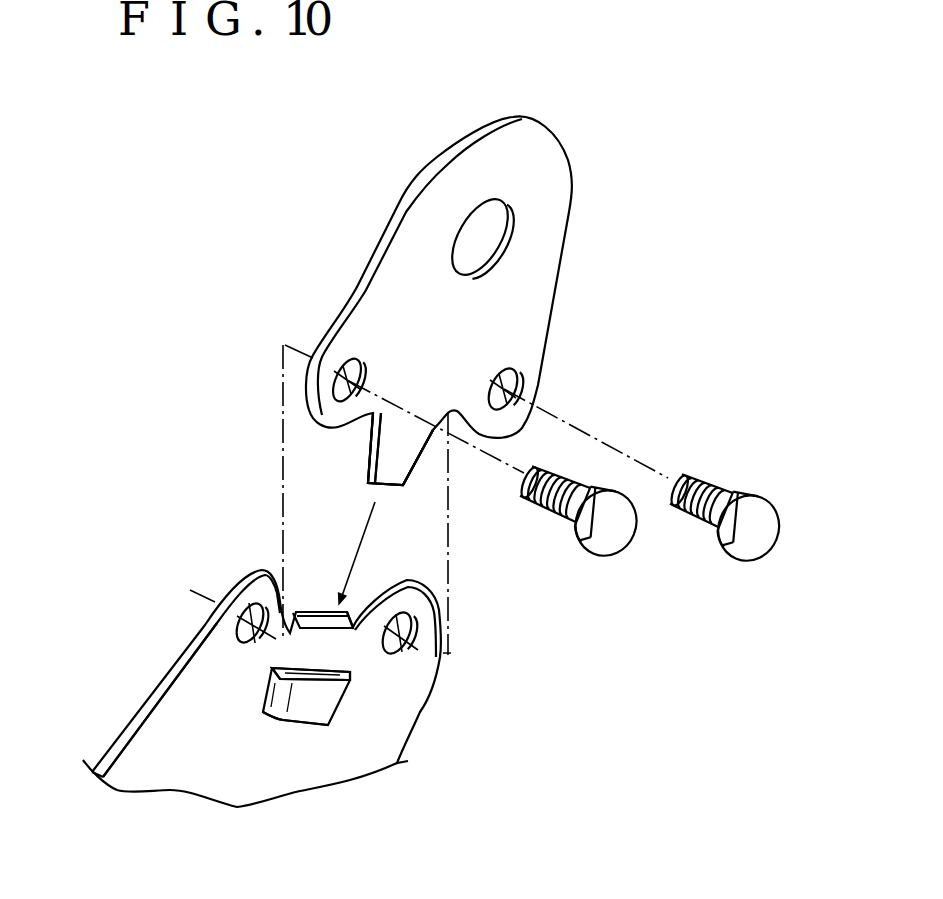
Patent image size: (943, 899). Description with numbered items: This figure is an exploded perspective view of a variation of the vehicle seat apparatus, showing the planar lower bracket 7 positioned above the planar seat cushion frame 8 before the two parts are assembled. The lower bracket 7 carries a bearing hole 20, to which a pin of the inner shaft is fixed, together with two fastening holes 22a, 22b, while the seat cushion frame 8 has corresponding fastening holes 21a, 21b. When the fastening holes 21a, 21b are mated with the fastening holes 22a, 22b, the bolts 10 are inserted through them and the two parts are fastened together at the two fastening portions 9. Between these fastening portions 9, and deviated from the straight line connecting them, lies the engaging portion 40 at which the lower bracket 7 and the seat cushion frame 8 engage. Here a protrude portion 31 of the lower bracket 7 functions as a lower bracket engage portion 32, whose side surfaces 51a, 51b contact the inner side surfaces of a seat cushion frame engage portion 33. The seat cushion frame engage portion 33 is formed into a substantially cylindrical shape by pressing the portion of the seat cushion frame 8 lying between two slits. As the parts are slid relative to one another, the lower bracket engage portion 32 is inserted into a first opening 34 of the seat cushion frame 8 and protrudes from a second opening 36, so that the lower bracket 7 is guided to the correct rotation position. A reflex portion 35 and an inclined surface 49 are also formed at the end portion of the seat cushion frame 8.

The lower bracket 7 is at (553, 237).
The seat cushion frame 8 is at (133, 727).
The fastening portions 9 is at (374, 503).
The bolts 10 is at (613, 542).
The bearing hole 20 is at (493, 217).
The fastening hole 21a is at (232, 635).
The fastening hole 21b is at (397, 647).
The fastening hole 22a is at (362, 368).
The fastening hole 22b is at (517, 380).
The protrude portion 31 is at (350, 452).
The lower bracket engage portion 32 is at (397, 467).
The seat cushion frame engage portion 33 is at (327, 702).
The first opening 34 is at (310, 660).
The reflex portion 35 is at (309, 612).
The second opening 36 is at (301, 733).
The engaging portion 40 is at (238, 740).
The inclined surface 49 is at (335, 628).
The side surface 51a is at (368, 468).
The side surface 51b is at (430, 458).